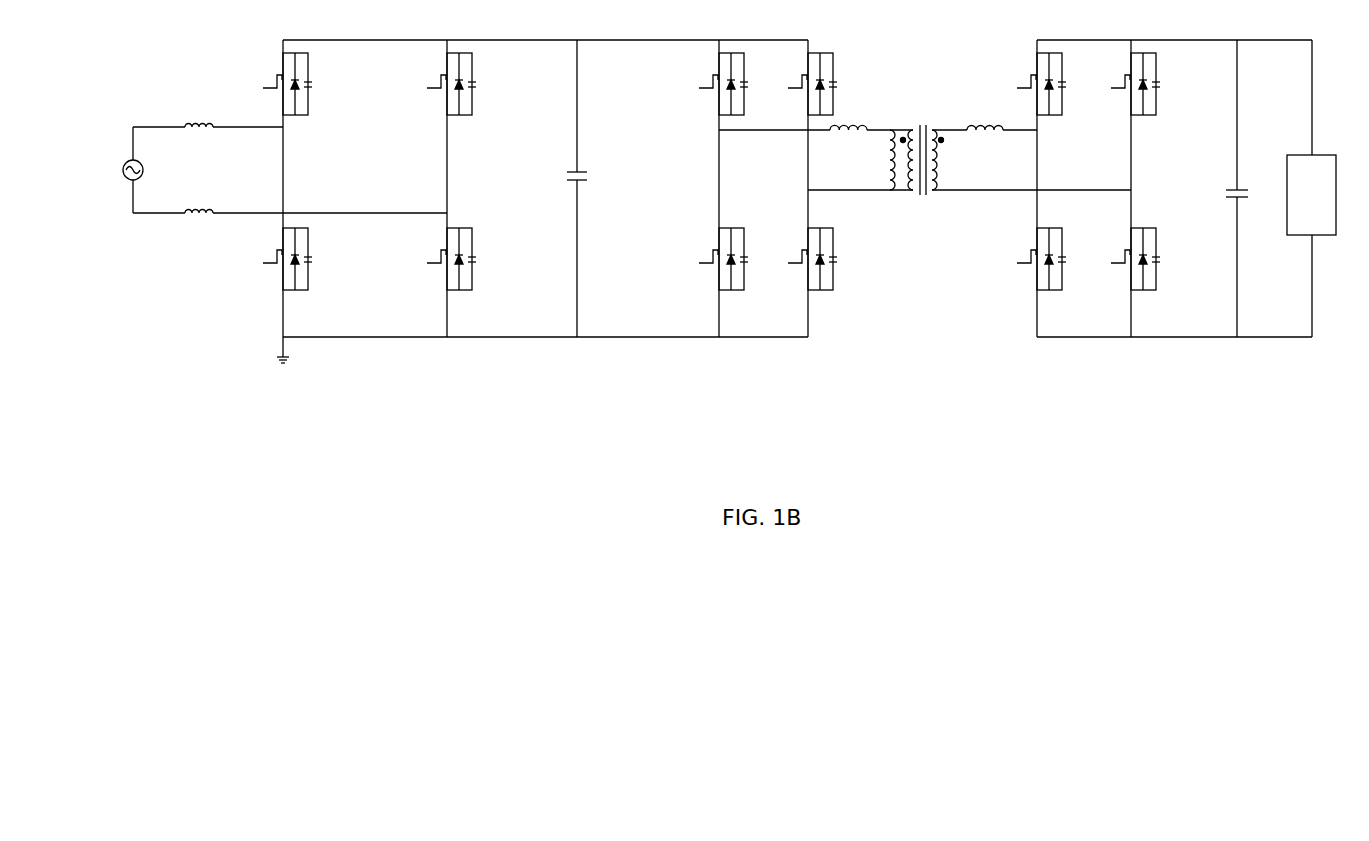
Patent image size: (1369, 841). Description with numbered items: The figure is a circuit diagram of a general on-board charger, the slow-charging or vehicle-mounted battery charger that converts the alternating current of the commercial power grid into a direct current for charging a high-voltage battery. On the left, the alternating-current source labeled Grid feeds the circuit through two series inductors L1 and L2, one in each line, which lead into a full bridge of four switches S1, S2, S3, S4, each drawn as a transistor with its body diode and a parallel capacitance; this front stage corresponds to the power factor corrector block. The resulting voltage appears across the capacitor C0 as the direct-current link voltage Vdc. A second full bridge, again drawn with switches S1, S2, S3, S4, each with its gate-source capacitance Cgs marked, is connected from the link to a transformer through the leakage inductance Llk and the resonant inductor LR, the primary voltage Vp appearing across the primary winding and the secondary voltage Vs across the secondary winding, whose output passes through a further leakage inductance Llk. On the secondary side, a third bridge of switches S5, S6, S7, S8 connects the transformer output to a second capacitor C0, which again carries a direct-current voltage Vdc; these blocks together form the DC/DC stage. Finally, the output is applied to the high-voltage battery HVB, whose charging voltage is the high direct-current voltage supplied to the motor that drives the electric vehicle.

The commercial power grid Grid is at (104, 170).
The grid-side filter inductor L1 is at (208, 108).
The grid-side filter inductor L2 is at (290, 194).
The switch S1 is at (496, 84).
The switch S2 is at (496, 259).
The switch S3 is at (623, 84).
The switch S4 is at (623, 259).
The switch S5 is at (1033, 84).
The switch S6 is at (1033, 259).
The switch S7 is at (1126, 84).
The switch S8 is at (1126, 259).
The gate-source capacitor Cgs is at (805, 177).
The DC-link capacitor C0 is at (891, 188).
The DC-link voltage Vdc is at (935, 186).
The leakage inductance Llk is at (916, 118).
The resonant inductor LR is at (875, 160).
The transformer primary voltage Vp is at (871, 160).
The transformer secondary voltage Vs is at (949, 160).
The element HVB is at (1311, 195).